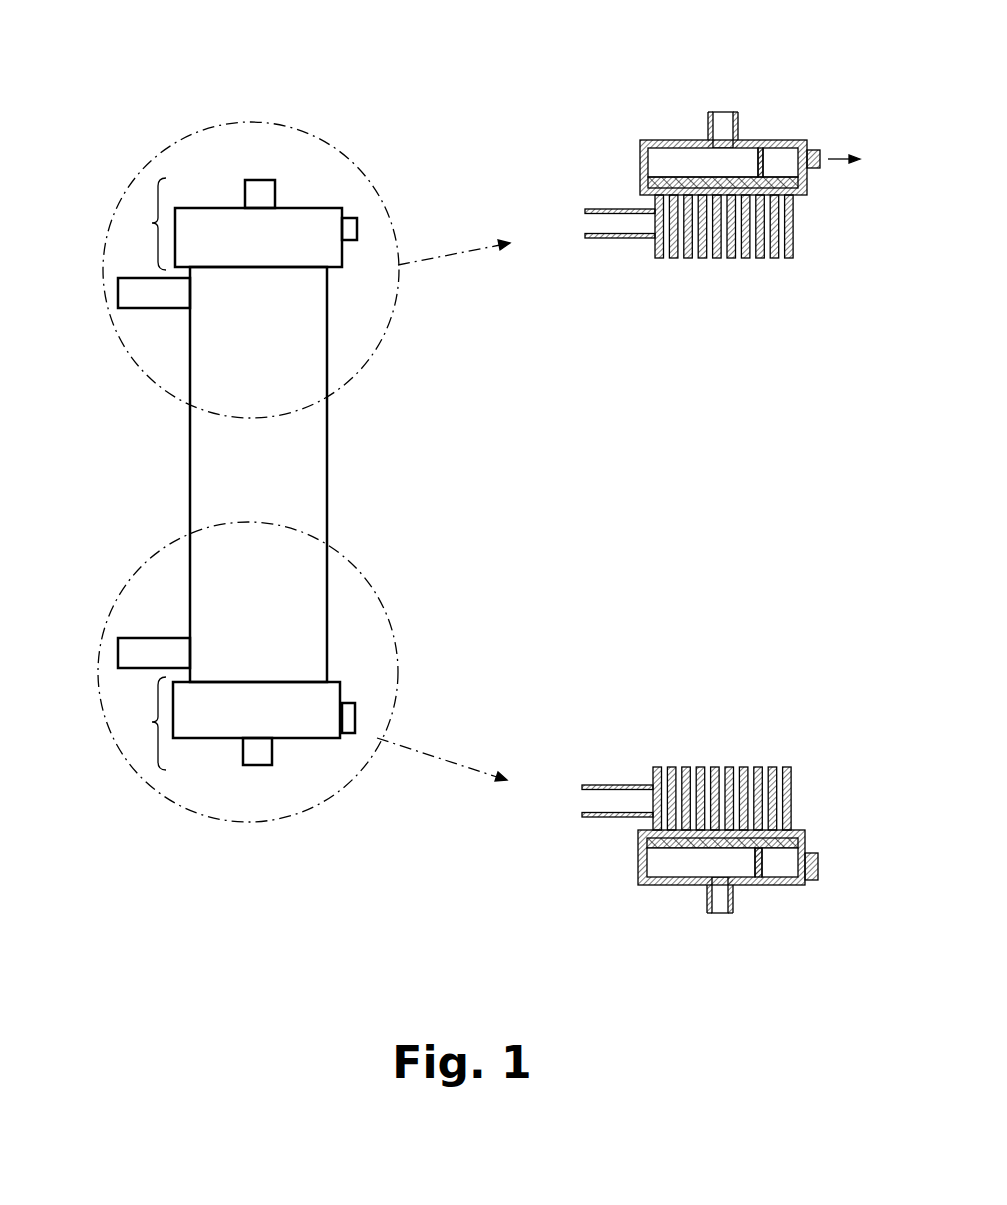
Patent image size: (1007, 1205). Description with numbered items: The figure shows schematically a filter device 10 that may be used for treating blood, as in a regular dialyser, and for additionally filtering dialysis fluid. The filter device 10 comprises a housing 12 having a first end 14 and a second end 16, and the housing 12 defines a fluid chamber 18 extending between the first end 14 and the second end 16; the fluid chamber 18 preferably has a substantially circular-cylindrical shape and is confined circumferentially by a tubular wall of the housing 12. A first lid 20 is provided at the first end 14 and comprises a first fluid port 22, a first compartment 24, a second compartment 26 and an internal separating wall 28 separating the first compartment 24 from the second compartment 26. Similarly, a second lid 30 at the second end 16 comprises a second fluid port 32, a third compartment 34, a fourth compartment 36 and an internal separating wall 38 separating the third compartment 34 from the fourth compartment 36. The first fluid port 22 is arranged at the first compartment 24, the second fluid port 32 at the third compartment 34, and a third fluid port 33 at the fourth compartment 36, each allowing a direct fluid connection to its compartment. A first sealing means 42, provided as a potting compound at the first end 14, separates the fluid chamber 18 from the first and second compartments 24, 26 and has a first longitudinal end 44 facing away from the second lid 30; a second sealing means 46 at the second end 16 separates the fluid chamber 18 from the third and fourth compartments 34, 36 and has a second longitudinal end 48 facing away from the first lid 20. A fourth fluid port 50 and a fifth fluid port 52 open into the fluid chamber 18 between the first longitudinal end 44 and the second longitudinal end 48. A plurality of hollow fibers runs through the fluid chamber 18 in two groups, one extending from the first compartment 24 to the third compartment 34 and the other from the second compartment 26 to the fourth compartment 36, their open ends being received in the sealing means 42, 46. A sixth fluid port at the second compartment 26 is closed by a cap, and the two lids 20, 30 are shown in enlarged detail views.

The filter device 10 is at (386, 120).
The housing 12 is at (340, 467).
The first end 14 is at (327, 682).
The second end 16 is at (327, 267).
The fluid chamber 18 is at (244, 384).
The first lid 20 is at (152, 722).
The first fluid port 22 is at (258, 765).
The first compartment 24 is at (667, 870).
The second compartment 26 is at (785, 870).
The internal separating wall 28 is at (768, 880).
The second lid 30 is at (152, 223).
The second fluid port 32 is at (258, 180).
The third fluid port 33 is at (357, 228).
The third compartment 34 is at (668, 150).
The fourth compartment 36 is at (785, 155).
The internal separating wall 38 is at (761, 150).
The first sealing means 42 is at (800, 835).
The first longitudinal end 44 is at (776, 853).
The second sealing means 46 is at (805, 188).
The second longitudinal end 48 is at (764, 192).
The fourth fluid port 50 is at (135, 293).
The fifth fluid port 52 is at (135, 655).